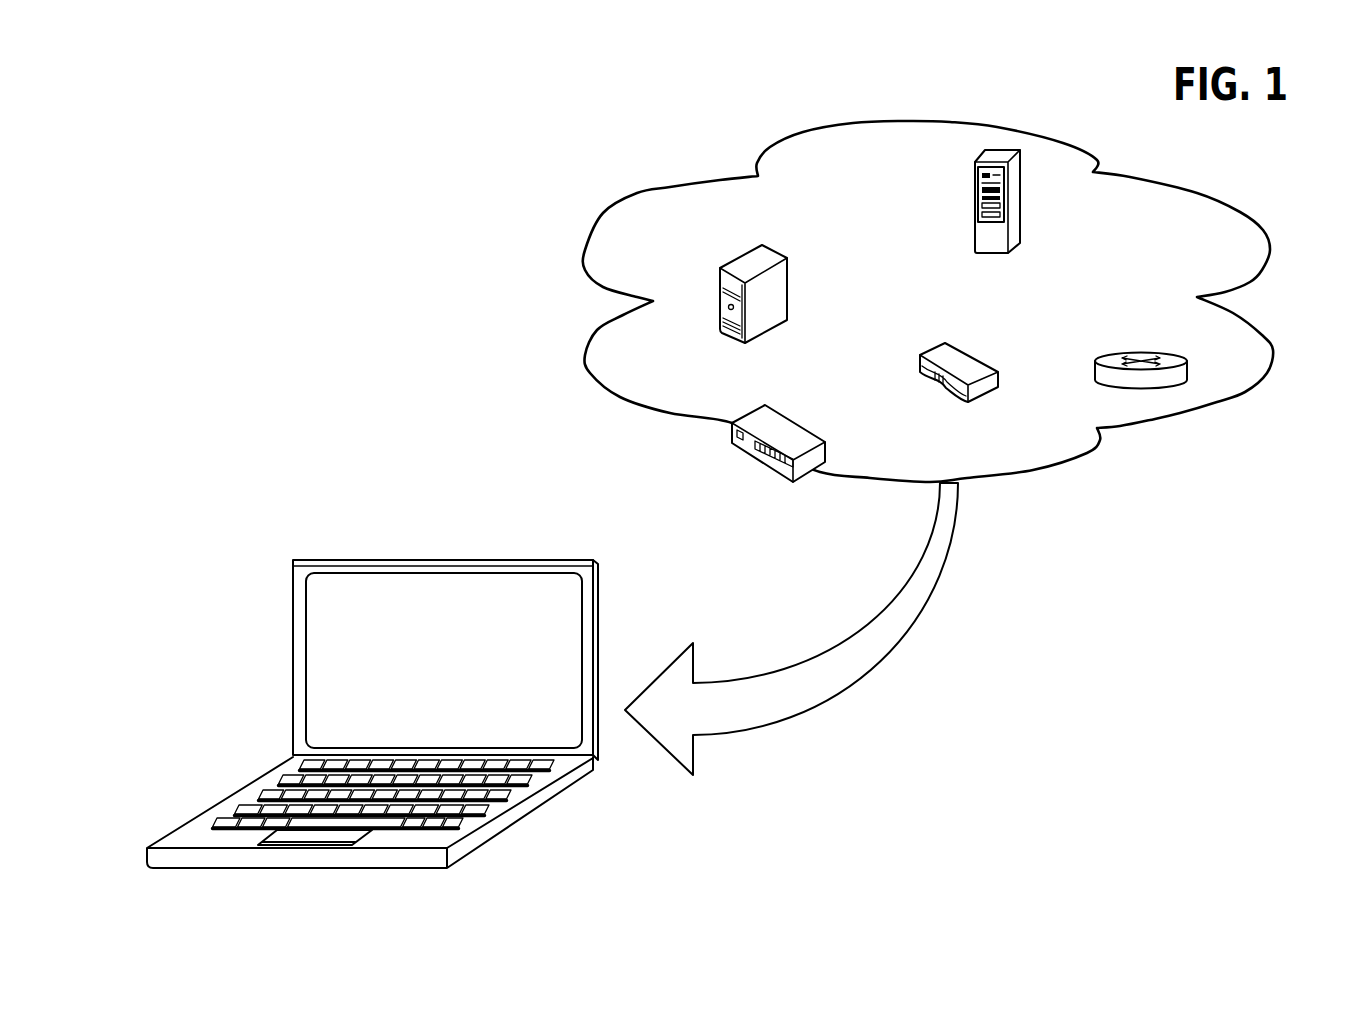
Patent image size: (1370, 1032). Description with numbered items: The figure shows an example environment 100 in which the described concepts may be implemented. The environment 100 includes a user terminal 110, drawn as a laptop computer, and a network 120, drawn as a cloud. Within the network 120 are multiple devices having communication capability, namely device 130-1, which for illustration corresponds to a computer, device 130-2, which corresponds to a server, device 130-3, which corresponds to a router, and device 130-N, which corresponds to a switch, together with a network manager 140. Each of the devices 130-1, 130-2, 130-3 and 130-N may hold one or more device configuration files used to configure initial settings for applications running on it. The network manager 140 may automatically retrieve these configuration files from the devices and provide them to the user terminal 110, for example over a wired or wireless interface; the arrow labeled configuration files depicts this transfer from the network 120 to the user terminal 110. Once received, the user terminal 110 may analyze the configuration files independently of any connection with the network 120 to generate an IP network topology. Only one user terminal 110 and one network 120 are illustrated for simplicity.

The environment 100 is at (248, 67).
The user terminal 110 is at (340, 560).
The network 120 is at (661, 190).
The device 130-1 is at (721, 268).
The device 130-2 is at (975, 202).
The device 130-3 is at (958, 356).
The device 130-N is at (1141, 354).
The network manager 140 is at (779, 413).